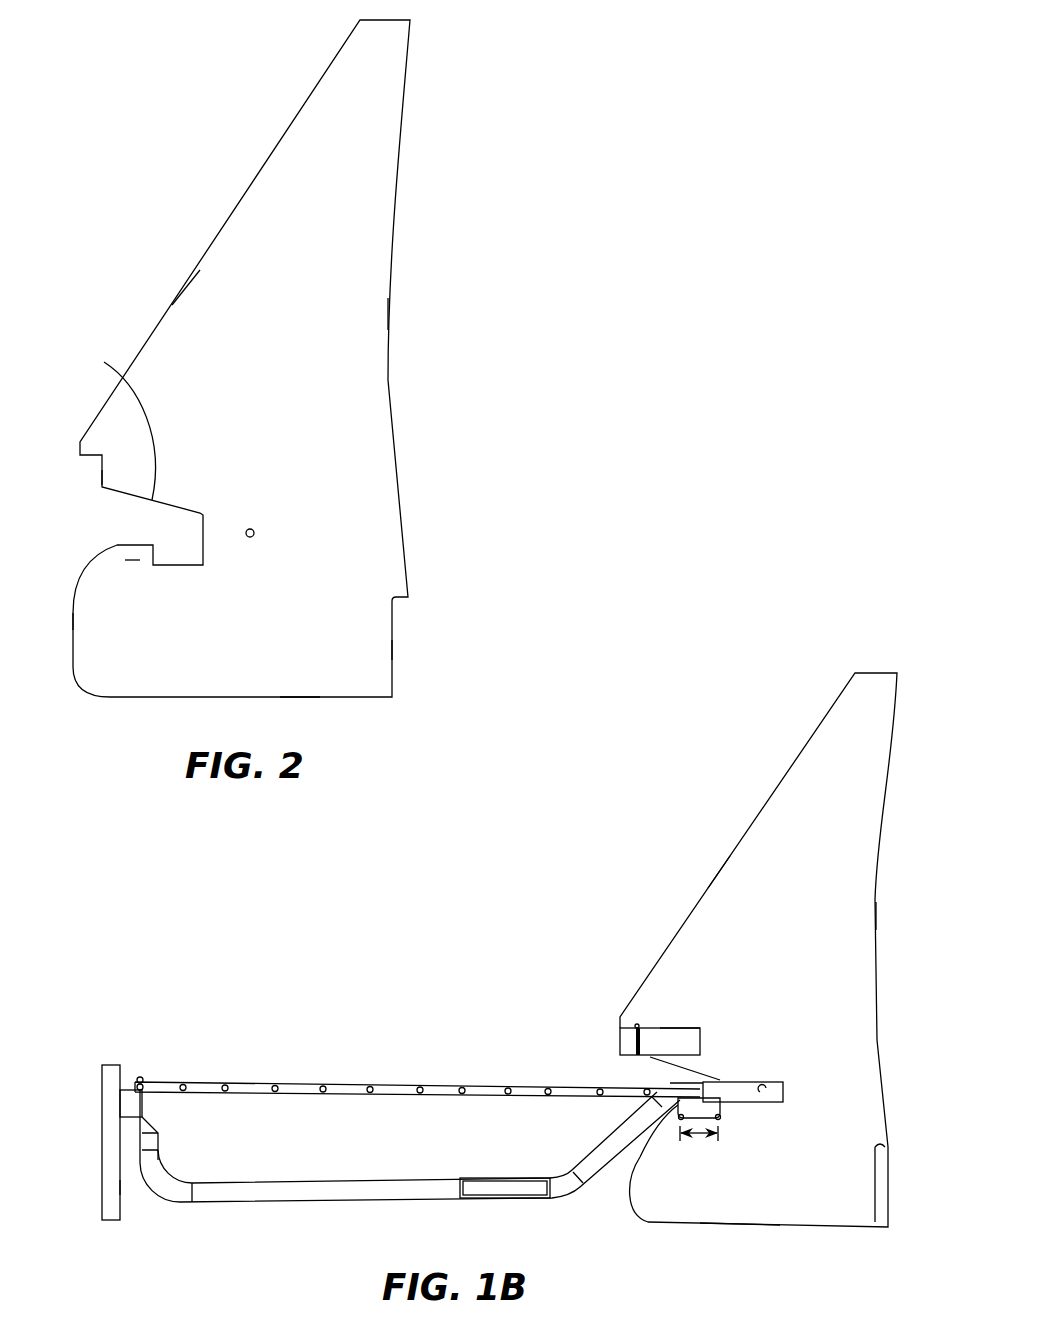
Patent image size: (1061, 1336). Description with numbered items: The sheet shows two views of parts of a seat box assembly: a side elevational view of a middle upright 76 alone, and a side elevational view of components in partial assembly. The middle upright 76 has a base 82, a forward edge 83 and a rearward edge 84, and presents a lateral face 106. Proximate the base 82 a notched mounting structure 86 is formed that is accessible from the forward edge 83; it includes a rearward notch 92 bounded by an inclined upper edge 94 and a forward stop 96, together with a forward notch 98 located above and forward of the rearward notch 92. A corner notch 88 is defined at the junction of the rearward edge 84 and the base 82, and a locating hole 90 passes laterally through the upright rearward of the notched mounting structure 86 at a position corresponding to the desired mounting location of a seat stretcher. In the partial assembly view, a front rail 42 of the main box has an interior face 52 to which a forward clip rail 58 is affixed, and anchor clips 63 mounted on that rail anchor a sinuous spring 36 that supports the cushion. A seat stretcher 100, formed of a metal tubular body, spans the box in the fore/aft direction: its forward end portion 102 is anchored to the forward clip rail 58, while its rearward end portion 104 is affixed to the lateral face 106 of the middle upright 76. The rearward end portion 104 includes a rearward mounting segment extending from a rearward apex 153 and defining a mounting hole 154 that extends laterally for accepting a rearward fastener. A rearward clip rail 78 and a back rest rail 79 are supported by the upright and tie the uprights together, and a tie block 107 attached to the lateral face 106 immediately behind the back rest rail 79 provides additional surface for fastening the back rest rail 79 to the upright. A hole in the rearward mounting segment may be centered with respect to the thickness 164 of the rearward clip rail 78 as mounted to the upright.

In FIG. 1B, the sinuous spring 36 is at (242, 1083).
In FIG. 1B, the front rail 42 is at (102, 1147).
In FIG. 1B, the interior face 52 is at (123, 1187).
In FIG. 1B, the forward clip rail 58 is at (128, 1108).
In FIG. 1B, the anchor clip 63 is at (703, 1083).
In FIG. 2, the middle upright 76 is at (236, 381).
In FIG. 1B, the middle upright 76 is at (538, 965).
In FIG. 1B, the rearward clip rail 78 is at (680, 1117).
In FIG. 1B, the back rest rail 79 is at (602, 1040).
In FIG. 2, the base 82 is at (293, 698).
In FIG. 1B, the base 82 is at (740, 1225).
In FIG. 2, the forward edge 83 is at (172, 305).
In FIG. 1B, the forward edge 83 is at (708, 888).
In FIG. 2, the rearward edge 84 is at (388, 298).
In FIG. 1B, the rearward edge 84 is at (877, 902).
In FIG. 2, the notched mounting structure 86 is at (110, 498).
In FIG. 1B, the notched mounting structure 86 is at (660, 1071).
In FIG. 2, the corner notch 88 is at (390, 658).
In FIG. 2, the locating hole 90 is at (253, 528).
In FIG. 2, the rearward notch 92 is at (167, 570).
In FIG. 2, the inclined upper edge 94 is at (118, 378).
In FIG. 2, the forward stop 96 is at (125, 562).
In FIG. 2, the forward notch 98 is at (102, 475).
In FIG. 1B, the seat stretcher 100 is at (410, 1146).
In FIG. 1B, the forward end portion 102 is at (165, 1172).
In FIG. 1B, the rearward end portion 104 is at (750, 1108).
In FIG. 2, the lateral face 106 is at (283, 360).
In FIG. 1B, the lateral face 106 is at (802, 919).
In FIG. 1B, the tie block 107 is at (678, 1028).
In FIG. 1B, the rearward apex 153 is at (670, 1083).
In FIG. 1B, the mounting hole 154 is at (770, 1088).
In FIG. 1B, the thickness 164 is at (698, 1142).